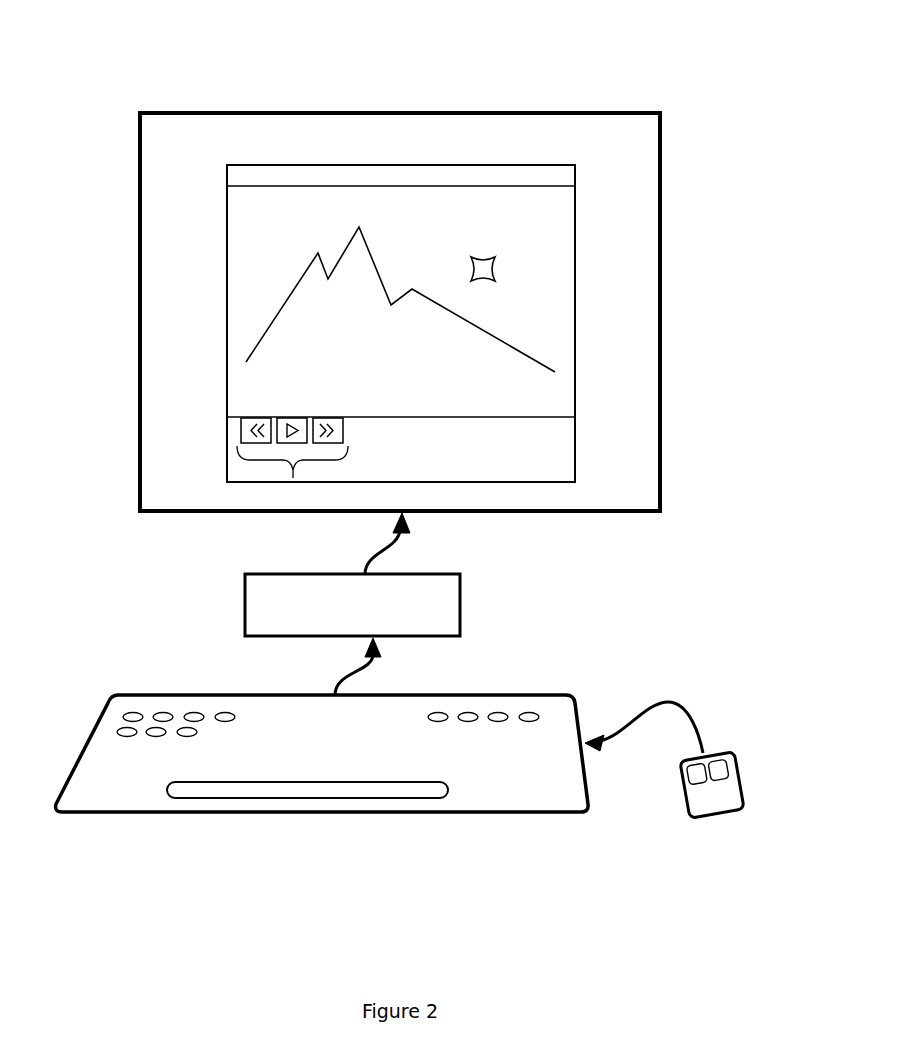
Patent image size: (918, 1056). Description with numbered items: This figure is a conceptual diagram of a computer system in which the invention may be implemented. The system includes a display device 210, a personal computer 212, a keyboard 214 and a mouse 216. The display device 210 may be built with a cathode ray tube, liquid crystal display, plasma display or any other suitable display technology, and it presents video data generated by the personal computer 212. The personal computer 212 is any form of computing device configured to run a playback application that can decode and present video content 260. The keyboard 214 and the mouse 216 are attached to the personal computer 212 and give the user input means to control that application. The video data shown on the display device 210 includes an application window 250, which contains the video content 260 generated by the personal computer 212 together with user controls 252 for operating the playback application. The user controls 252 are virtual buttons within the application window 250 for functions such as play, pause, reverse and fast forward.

The display device 210 is at (552, 511).
The personal computer 212 is at (352, 604).
The keyboard 214 is at (312, 812).
The mouse 216 is at (707, 814).
The application window 250 is at (262, 166).
The user controls 252 is at (293, 478).
The video content 260 is at (532, 315).